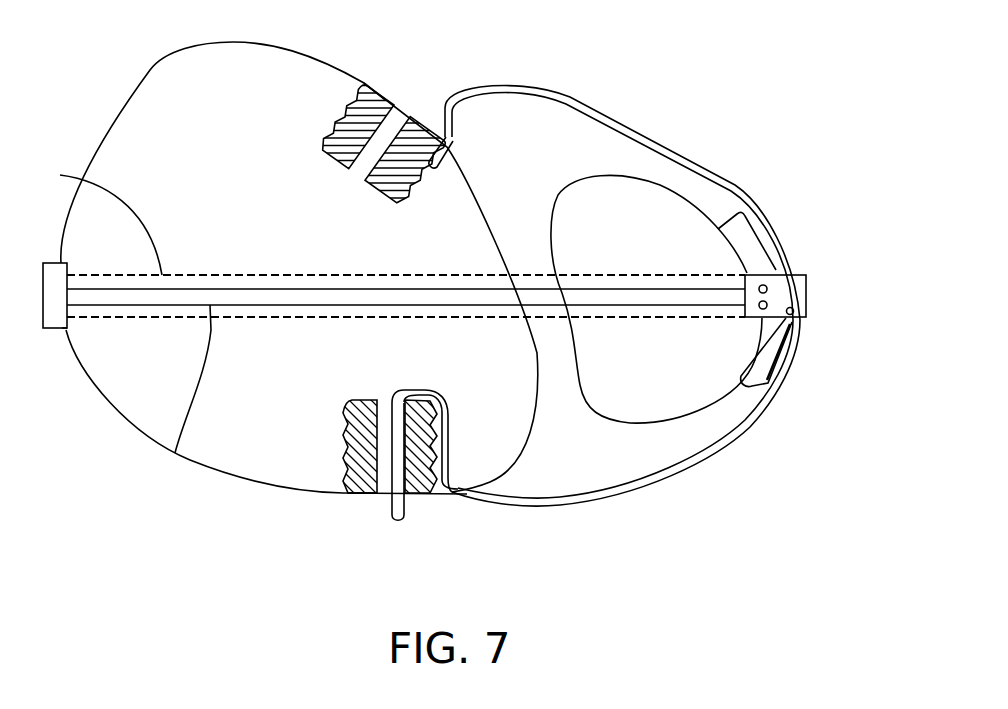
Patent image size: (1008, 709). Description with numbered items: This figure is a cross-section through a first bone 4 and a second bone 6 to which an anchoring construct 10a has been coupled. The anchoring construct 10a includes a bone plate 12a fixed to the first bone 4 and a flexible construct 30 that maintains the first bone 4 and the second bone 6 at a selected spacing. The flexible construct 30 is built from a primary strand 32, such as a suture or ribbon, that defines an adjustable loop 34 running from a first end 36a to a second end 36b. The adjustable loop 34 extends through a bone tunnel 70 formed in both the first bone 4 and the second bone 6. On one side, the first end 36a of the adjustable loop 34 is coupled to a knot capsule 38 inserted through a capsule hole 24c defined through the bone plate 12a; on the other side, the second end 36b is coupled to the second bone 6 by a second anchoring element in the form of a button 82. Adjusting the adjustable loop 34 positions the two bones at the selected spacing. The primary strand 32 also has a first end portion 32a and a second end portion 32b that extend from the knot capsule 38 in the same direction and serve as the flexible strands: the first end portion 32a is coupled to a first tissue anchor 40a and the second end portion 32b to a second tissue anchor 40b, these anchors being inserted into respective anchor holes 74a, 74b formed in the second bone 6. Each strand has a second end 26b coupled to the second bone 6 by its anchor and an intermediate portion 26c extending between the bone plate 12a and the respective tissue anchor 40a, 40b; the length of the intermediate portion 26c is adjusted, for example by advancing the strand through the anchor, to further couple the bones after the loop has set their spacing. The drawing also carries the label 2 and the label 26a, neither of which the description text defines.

The clip assembly 2 is at (782, 99).
The first bone 4 is at (703, 376).
The second bone 6 is at (230, 53).
The anchoring construct 10a is at (824, 287).
The bone plate 12a is at (746, 212).
The capsule hole 24c is at (796, 261).
The engagement tab 26a is at (780, 384).
The second end 26b is at (450, 165).
The intermediate portion 26c is at (570, 94).
The flexible construct 30 is at (821, 335).
The primary strand 32 is at (117, 287).
The first end portion 32a is at (560, 493).
The second end portion 32b is at (646, 128).
The adjustable loop 34 is at (175, 453).
The first end 36a is at (725, 257).
The second end 36b is at (82, 333).
The knot capsule 38 is at (808, 304).
The first tissue anchor 40a is at (360, 496).
The second tissue anchor 40b is at (351, 98).
The bone tunnel 70 is at (60, 175).
The anchor hole 74a is at (350, 485).
The anchor hole 74b is at (340, 118).
The button 82 is at (47, 327).